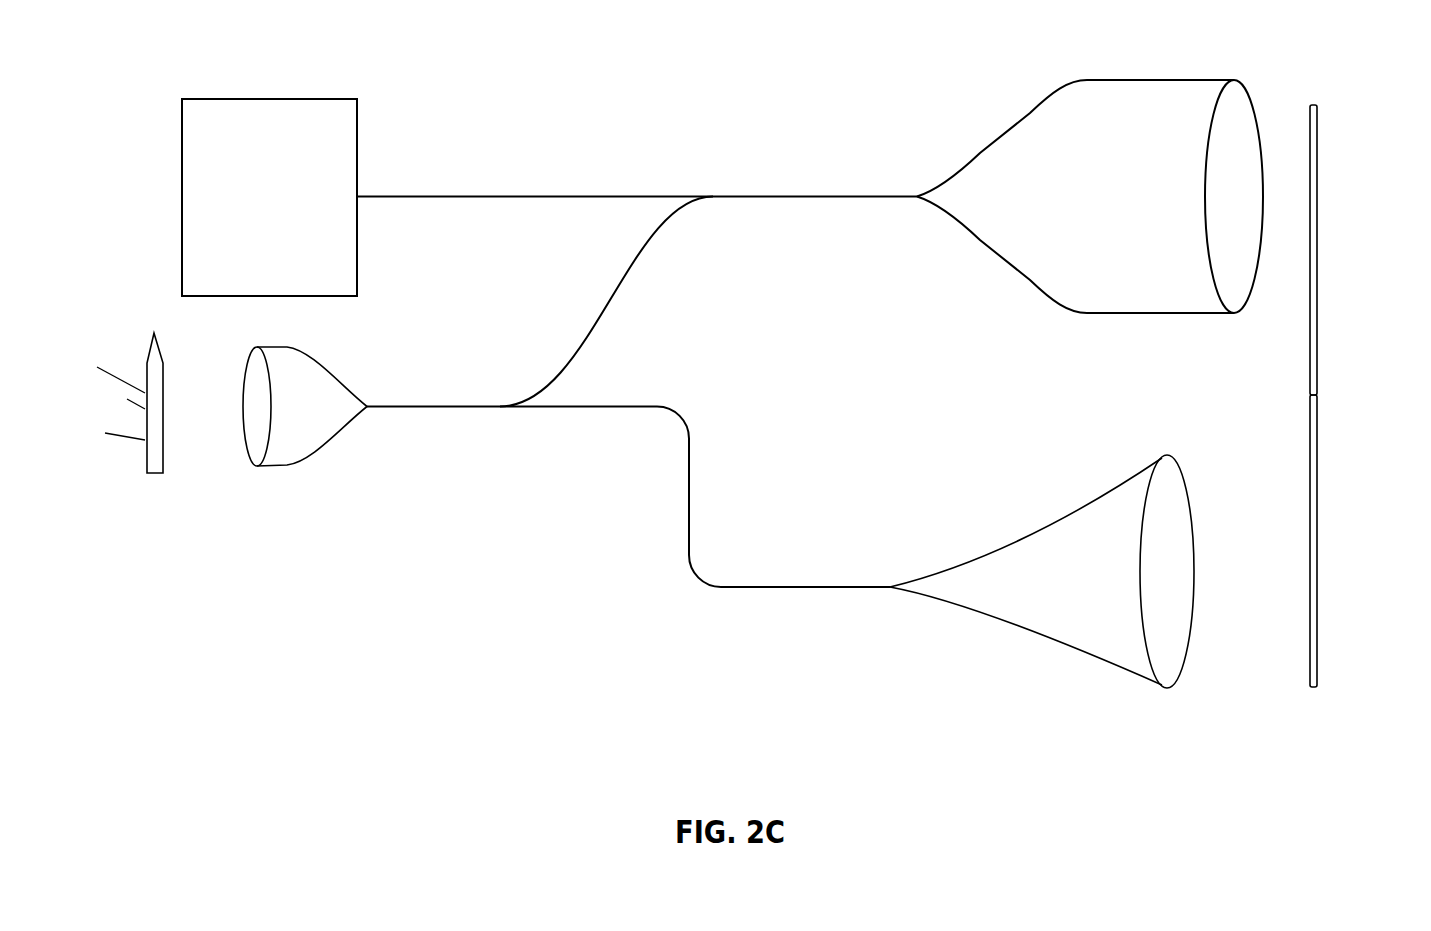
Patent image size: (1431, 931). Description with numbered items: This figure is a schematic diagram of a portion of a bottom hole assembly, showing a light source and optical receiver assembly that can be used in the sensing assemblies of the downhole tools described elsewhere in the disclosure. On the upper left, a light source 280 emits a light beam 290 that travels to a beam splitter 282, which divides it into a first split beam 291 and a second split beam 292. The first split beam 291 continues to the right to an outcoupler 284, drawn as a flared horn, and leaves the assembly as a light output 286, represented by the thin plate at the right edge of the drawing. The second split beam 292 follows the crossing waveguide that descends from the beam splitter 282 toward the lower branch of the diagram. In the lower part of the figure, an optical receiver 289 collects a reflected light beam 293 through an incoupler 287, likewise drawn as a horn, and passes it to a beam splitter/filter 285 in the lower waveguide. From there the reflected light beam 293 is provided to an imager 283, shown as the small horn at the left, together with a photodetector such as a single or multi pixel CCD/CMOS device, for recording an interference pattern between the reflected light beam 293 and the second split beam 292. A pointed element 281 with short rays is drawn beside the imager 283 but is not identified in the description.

The light source 280 is at (268, 120).
The probe / needle 281 is at (157, 474).
The beam splitter 282 is at (717, 196).
The imager 283 is at (283, 467).
The outcoupler 284 is at (1157, 95).
The beam splitter/filter 285 is at (516, 407).
The light output 286 is at (1318, 252).
The incoupler 287 is at (1110, 627).
The optical receiver 289 is at (1318, 542).
The light beam 290 is at (449, 196).
The first split beam 291 is at (834, 196).
The second split beam 292 is at (610, 300).
The reflected light beam 293 is at (731, 586).